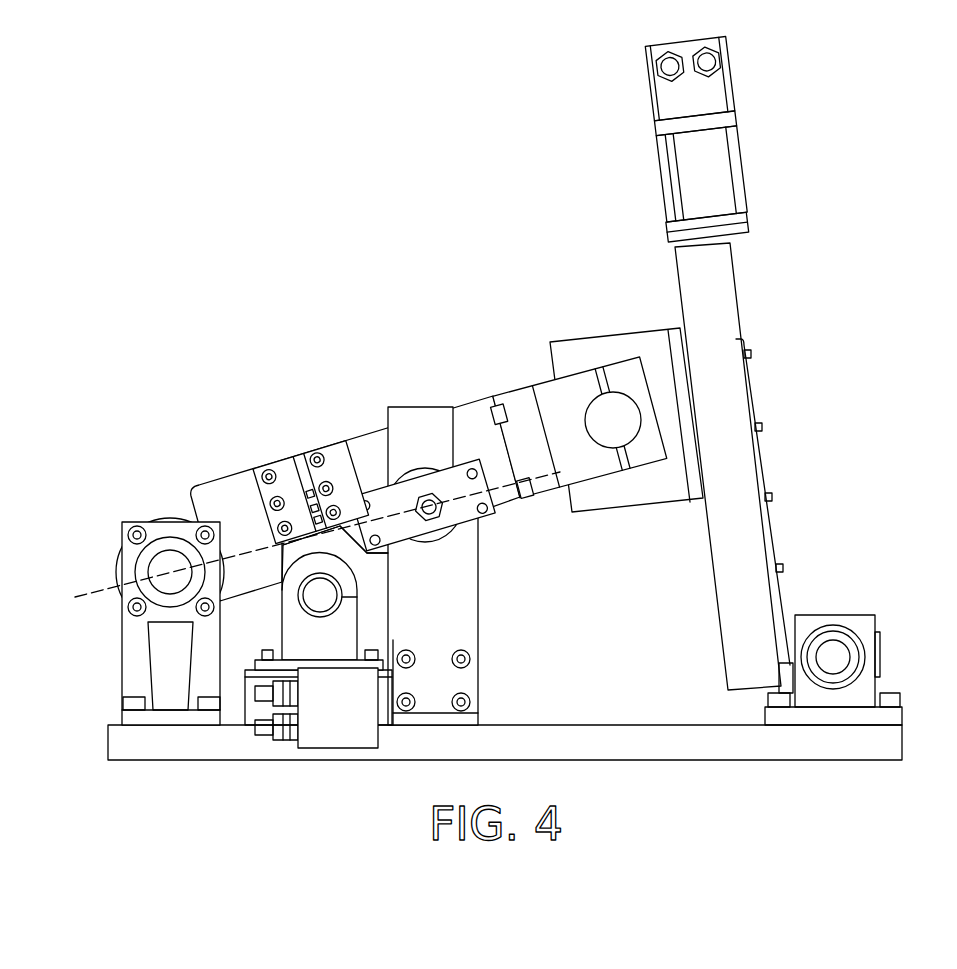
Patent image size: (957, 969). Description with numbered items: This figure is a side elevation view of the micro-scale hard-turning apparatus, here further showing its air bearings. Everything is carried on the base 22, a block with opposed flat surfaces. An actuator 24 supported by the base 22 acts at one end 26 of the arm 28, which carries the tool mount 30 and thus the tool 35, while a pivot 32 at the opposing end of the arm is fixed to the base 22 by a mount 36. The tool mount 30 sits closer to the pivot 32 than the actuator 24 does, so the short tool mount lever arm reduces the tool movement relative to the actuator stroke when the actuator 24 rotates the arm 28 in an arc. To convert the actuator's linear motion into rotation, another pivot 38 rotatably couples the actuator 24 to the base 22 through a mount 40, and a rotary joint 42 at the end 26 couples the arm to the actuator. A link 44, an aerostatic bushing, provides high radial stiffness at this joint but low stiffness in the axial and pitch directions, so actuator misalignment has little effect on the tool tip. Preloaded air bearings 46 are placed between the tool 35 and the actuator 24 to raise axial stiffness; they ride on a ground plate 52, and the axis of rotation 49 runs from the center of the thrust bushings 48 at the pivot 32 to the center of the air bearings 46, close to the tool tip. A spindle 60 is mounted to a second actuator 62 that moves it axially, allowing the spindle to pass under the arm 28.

The base 22 is at (680, 763).
The actuator 24 is at (737, 457).
The end of the arm 26 is at (593, 488).
The arm 28 is at (345, 437).
The tool mount 30 is at (283, 452).
The pivot 32 is at (165, 572).
The tool 35 is at (308, 532).
The mount 36 is at (130, 655).
The pivot 38 is at (833, 647).
The mount 40 is at (862, 688).
The rotary joint 42 is at (611, 402).
The link 44 is at (652, 493).
The air bearings 46 is at (463, 515).
The thrust bushings 48 is at (160, 530).
The axis of rotation 49 is at (246, 547).
The plate 52 is at (480, 612).
The spindle 60 is at (318, 604).
The actuator 62 is at (352, 732).